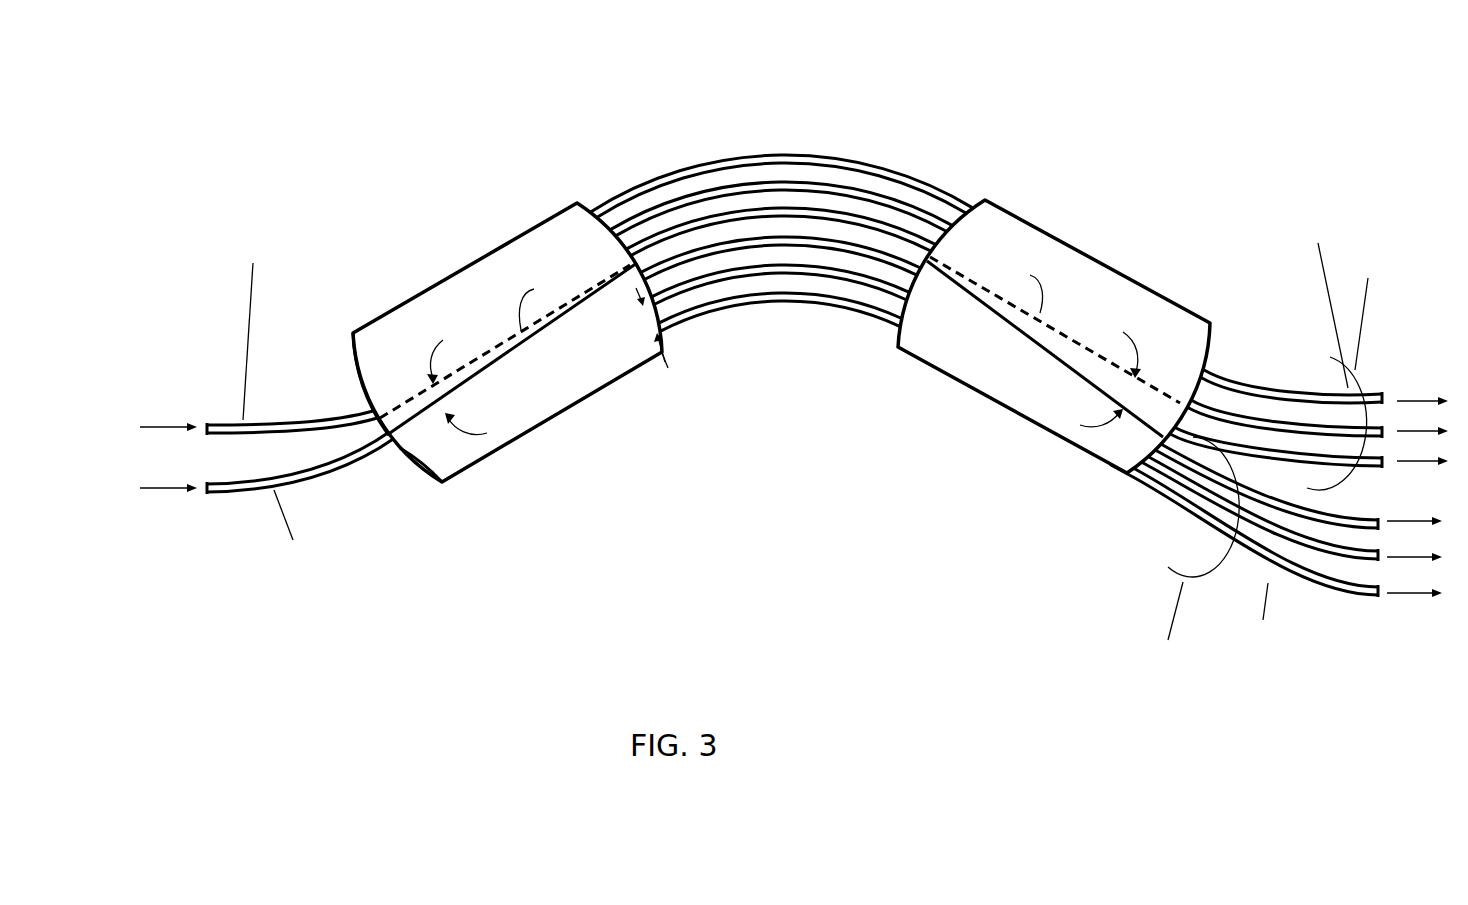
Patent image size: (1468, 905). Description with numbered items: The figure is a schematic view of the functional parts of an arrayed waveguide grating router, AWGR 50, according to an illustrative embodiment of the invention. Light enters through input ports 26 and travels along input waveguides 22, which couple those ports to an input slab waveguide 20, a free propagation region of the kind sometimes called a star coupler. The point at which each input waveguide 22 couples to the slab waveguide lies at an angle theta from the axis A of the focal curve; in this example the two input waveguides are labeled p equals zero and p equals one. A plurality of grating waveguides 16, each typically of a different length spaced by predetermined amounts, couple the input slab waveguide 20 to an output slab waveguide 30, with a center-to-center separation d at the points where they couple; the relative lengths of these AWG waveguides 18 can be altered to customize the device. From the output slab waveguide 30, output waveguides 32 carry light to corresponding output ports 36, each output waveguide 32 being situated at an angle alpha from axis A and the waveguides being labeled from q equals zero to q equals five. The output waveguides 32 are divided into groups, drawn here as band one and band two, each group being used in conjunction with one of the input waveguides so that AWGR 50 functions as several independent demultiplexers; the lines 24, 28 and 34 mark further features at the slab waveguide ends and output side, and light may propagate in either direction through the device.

The arrayed waveguide grating router 50 is at (1000, 95).
The grating waveguides 16 is at (781, 206).
The AWG waveguides 18 is at (910, 227).
The input slab waveguide 20 is at (503, 243).
The output slab waveguide 30 is at (1120, 272).
The input waveguides 22 is at (300, 468).
The input end face of first block 24 is at (377, 430).
The input ports 26 is at (205, 490).
The lower edge of first block 28 is at (408, 463).
The output waveguides 32 is at (1293, 457).
The output fiber pigtails 34 is at (1240, 405).
The output ports 36 is at (1385, 448).